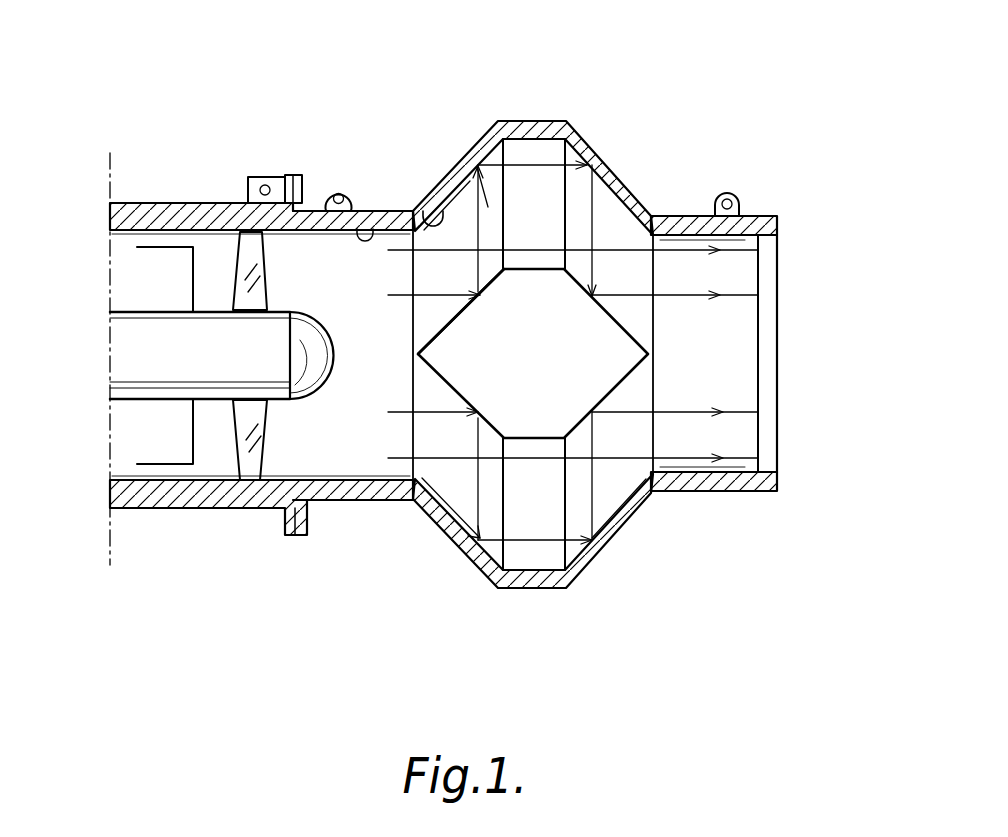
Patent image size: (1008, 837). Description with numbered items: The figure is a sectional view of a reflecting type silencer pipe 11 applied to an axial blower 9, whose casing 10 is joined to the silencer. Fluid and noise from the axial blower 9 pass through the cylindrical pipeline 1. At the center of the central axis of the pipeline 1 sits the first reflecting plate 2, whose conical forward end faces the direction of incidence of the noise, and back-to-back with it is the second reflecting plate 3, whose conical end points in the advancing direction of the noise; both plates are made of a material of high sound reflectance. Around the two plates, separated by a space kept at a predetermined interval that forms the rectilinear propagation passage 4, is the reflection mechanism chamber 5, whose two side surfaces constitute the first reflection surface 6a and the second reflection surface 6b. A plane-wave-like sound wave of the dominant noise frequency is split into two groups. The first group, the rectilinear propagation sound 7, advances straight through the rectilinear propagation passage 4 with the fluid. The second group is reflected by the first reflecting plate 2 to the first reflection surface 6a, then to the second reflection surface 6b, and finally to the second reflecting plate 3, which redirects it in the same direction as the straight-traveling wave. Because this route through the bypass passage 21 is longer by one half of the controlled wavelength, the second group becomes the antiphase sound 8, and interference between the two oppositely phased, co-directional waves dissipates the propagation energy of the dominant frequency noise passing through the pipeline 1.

The pipeline 1 is at (357, 210).
The first reflecting plate 2 is at (452, 320).
The second reflecting plate 3 is at (633, 337).
The rectilinear propagation passage 4 is at (515, 120).
The reflection mechanism chamber 5 is at (543, 140).
The first reflection surface 6a is at (423, 212).
The second reflection surface 6b is at (600, 160).
The rectilinear propagation sound 7 is at (757, 250).
The antiphase sound 8 is at (757, 295).
The axial blower 9 is at (148, 311).
The casing 10 is at (190, 203).
The reflecting type silencer pipe 11 is at (771, 507).
The bypass passage 21 is at (427, 310).